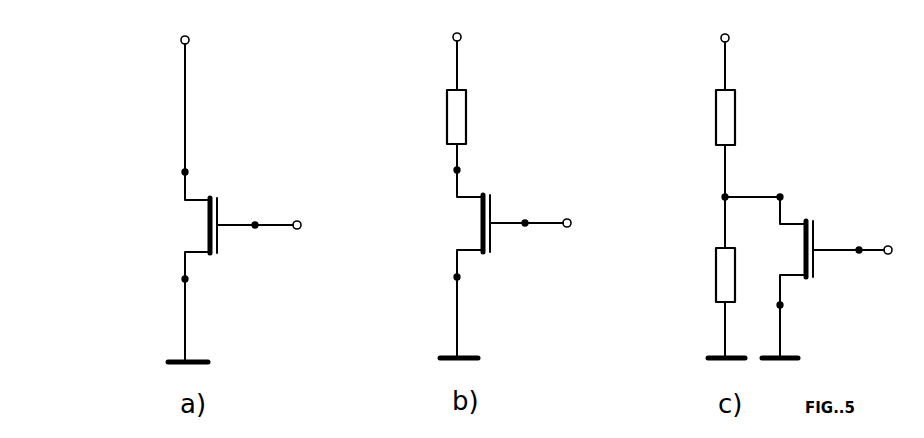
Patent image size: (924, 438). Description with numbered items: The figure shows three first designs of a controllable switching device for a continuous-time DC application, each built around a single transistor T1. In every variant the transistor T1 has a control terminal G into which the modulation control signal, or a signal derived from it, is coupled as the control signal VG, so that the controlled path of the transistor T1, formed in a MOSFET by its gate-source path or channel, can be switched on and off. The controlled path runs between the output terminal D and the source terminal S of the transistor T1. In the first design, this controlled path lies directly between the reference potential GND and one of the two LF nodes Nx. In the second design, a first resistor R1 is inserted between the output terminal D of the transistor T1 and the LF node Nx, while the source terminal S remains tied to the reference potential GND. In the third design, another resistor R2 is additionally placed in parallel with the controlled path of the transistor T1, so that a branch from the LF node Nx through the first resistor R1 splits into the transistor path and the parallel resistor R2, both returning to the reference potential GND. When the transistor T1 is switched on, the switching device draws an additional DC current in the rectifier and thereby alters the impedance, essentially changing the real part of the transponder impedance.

The LF node Nx is at (190, 40).
The first resistor R1 is at (467, 117).
The another resistor R2 is at (716, 281).
The transistor T1 is at (203, 230).
The output terminal D is at (190, 171).
The control terminal G is at (257, 222).
The source terminal S is at (190, 278).
The control signal VG is at (318, 232).
The reference potential GND is at (193, 352).